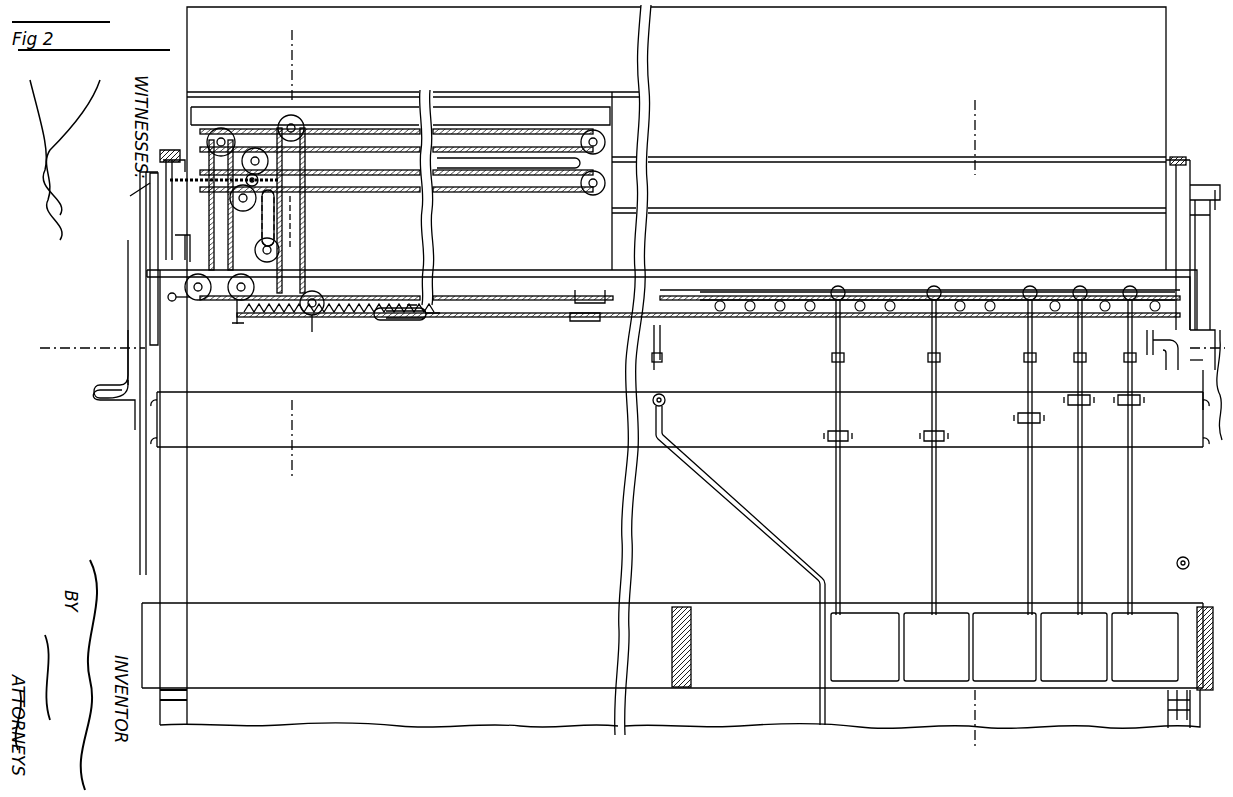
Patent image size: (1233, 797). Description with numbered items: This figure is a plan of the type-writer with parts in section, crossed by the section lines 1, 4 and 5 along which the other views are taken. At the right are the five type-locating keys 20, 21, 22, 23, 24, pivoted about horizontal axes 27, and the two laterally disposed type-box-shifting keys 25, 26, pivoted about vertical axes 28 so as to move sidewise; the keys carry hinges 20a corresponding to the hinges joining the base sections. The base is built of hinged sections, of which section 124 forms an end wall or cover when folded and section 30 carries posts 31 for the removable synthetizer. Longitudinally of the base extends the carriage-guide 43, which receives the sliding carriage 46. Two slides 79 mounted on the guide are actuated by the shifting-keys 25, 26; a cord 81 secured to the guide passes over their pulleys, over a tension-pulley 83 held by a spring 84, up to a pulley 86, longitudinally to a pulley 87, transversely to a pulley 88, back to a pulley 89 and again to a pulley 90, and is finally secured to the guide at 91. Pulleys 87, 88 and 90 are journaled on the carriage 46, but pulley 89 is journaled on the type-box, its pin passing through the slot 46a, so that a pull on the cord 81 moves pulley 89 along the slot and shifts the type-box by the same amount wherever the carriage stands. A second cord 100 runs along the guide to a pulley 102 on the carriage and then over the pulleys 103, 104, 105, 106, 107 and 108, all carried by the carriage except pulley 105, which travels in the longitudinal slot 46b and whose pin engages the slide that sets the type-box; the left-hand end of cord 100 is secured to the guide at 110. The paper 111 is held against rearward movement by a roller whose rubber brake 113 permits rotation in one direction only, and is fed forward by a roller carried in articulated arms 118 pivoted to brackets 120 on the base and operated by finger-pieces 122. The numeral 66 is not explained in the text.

The section line 1 1 is at (629, 342).
The section line 4 4 is at (972, 427).
The section line 5 5 is at (275, 257).
The type-locating key 20 is at (1145, 647).
The hinge 20a is at (846, 358).
The type-locating key 21 is at (1074, 647).
The type-locating key 22 is at (1004, 647).
The type-locating key 23 is at (936, 647).
The type-locating key 24 is at (865, 647).
The type-box-shifting key 25 is at (735, 490).
The type-box-shifting key 26 is at (1168, 708).
The horizontal axis 27 is at (850, 436).
The vertical axis 28 is at (664, 395).
The base section 30 is at (173, 497).
The post 31 is at (688, 660).
The carriage-guide 43 is at (515, 268).
The carriage 46 is at (400, 178).
The slot 46a is at (268, 222).
The longitudinal slot 46b is at (485, 163).
The roller 66 is at (845, 285).
The slide 79 is at (662, 342).
The cord 81 is at (510, 320).
The tension-pulley 83 is at (420, 322).
The spring 84 is at (278, 325).
The pulley 86 is at (587, 318).
The pulley 87 is at (312, 319).
The pulley 88 is at (304, 125).
The pulley 89 is at (276, 258).
The pulley 90 is at (274, 178).
The attaching-point 91 is at (144, 179).
The cord 100 is at (395, 190).
The pulley 102 is at (236, 298).
The pulley 103 is at (230, 196).
The pulley 104 is at (590, 195).
The pulley 105 is at (242, 165).
The pulley 106 is at (605, 138).
The pulley 107 is at (232, 117).
The pulley 108 is at (192, 298).
The attaching-point 110 is at (168, 298).
The paper 111 is at (676, 364).
The rubber brake 113 is at (1172, 170).
The articulated arm 118 is at (1205, 227).
The bracket 120 is at (150, 238).
The finger-piece 122 is at (112, 395).
The base section 124 is at (180, 725).